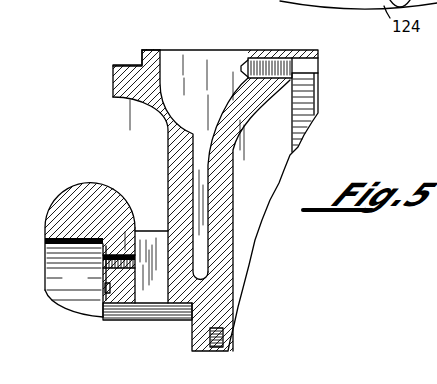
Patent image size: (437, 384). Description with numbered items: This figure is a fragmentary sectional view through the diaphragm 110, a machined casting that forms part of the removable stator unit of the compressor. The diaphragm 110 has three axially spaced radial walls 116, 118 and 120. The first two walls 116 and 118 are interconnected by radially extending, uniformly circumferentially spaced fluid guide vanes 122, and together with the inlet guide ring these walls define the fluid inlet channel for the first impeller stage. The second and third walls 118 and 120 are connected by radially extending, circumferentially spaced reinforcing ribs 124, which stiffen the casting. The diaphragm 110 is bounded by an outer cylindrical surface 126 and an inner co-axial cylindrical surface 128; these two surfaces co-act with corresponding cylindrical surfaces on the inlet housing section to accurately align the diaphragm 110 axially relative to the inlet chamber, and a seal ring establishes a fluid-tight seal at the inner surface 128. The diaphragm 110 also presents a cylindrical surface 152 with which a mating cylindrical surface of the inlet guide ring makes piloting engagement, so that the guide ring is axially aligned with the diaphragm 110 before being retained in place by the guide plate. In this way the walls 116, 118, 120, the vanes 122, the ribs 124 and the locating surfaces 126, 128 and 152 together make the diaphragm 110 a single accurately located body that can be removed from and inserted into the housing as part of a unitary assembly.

The diaphragm 110 is at (150, 46).
The radial wall 116 is at (108, 277).
The radial wall 118 is at (178, 187).
The radial wall 120 is at (232, 186).
The fluid guide vanes 122 is at (143, 290).
The reinforcing ribs 124 is at (221, 64).
The outer cylindrical surface 126 is at (124, 65).
The inner co-axial cylindrical surface 128 is at (45, 245).
The cylindrical surface 152 is at (177, 305).